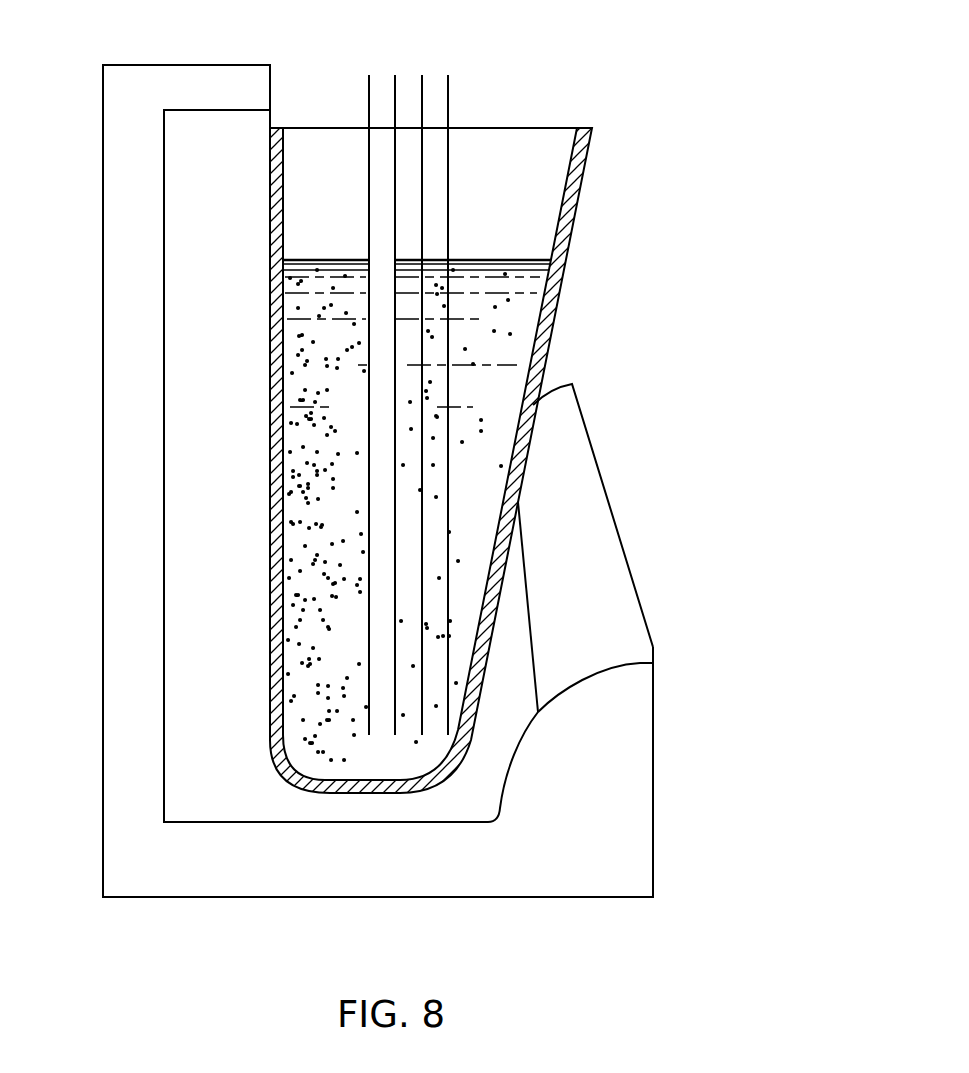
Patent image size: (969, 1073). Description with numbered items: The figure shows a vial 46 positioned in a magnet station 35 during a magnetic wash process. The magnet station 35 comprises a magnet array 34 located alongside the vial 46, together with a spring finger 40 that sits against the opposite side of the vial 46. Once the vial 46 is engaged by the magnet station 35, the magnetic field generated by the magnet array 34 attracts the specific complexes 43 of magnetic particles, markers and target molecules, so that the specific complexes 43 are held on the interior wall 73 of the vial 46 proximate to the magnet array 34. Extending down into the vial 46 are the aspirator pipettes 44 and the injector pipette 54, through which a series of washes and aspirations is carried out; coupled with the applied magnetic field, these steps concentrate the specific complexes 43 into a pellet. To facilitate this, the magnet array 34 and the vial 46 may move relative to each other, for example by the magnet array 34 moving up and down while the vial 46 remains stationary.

The magnet array 34 is at (185, 667).
The magnet station 35 is at (92, 53).
The spring finger 40 is at (589, 574).
The specific complexes 43 is at (499, 341).
The aspirator pipettes 44 is at (448, 97).
The vial 46 is at (423, 420).
The injector pipette 54 is at (368, 97).
The interior wall 73 is at (270, 440).